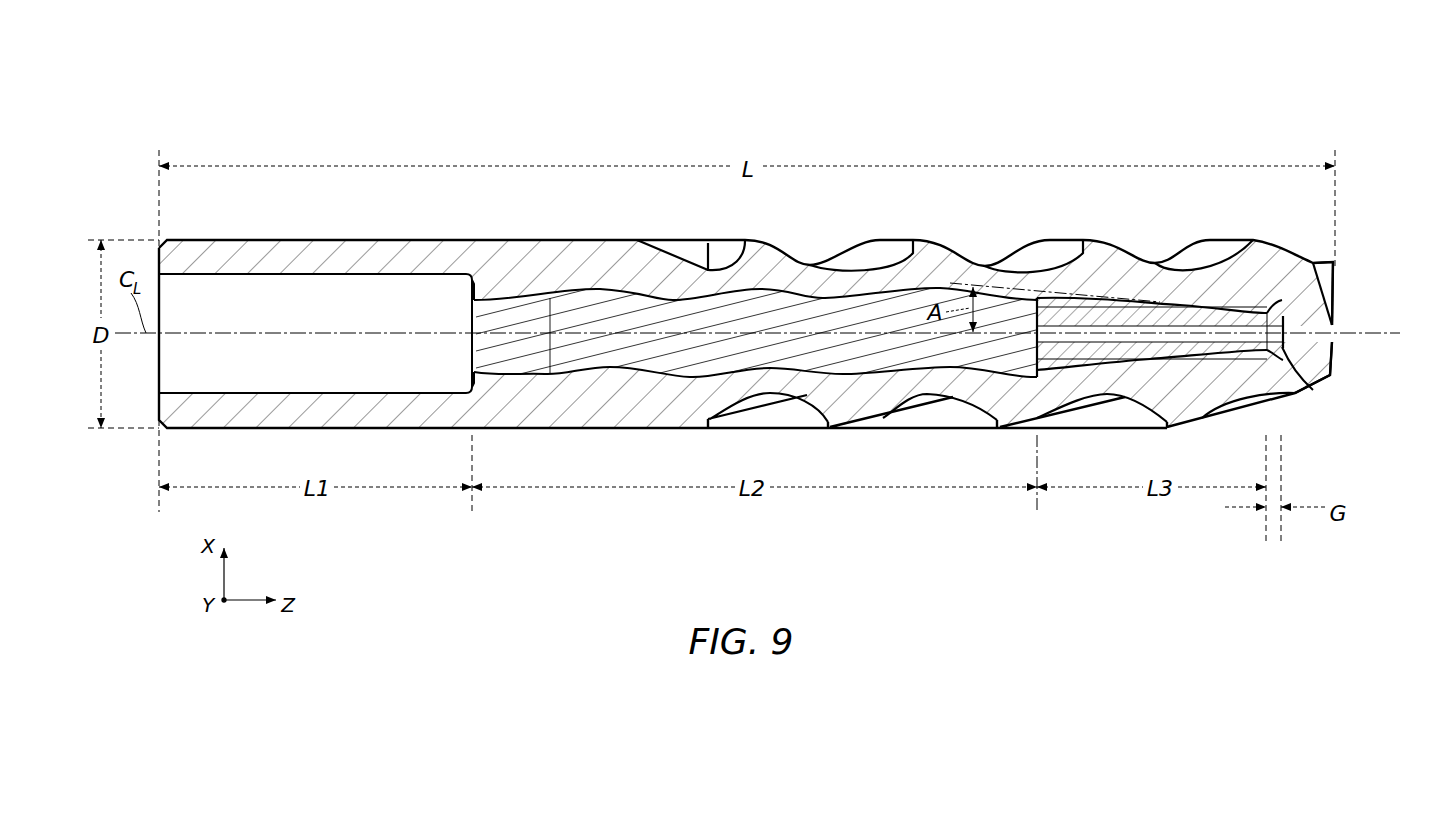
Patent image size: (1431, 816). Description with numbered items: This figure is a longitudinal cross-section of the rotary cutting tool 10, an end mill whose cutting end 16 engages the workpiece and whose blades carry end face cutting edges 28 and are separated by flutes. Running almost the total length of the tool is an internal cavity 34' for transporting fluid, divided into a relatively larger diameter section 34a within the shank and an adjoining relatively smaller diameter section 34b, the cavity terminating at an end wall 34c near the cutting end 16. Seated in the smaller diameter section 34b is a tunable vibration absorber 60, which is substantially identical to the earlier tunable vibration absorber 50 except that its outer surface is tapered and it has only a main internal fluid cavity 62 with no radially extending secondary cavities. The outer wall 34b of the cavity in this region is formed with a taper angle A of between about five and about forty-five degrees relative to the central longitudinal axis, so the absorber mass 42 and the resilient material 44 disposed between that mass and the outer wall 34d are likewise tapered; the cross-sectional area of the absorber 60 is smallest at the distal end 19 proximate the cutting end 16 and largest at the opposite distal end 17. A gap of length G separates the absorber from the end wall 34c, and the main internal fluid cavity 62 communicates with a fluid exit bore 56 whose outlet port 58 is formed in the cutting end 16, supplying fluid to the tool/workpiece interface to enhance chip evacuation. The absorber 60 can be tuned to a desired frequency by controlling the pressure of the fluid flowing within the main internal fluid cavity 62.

The rotary cutting tool 10 is at (390, 146).
The cutting end 16 is at (1387, 257).
The distal end 17 is at (1033, 318).
The distal end 19 is at (1300, 386).
The end face cutting edge 28 is at (1349, 274).
The relatively larger diameter section 34a is at (344, 364).
The relatively smaller diameter section 34b is at (677, 345).
The end wall 34c is at (1275, 300).
The outer wall 34d is at (806, 357).
The core 34' is at (776, 344).
The absorber mass 42 is at (1182, 352).
The resilient material 44 is at (1218, 366).
The tunable vibration absorber 50 is at (1127, 282).
The fluid exit bore 56 is at (1334, 341).
The outlet port 58 is at (1334, 327).
The tunable vibration absorber 60 is at (1118, 364).
The main internal fluid cavity 62 is at (1149, 339).